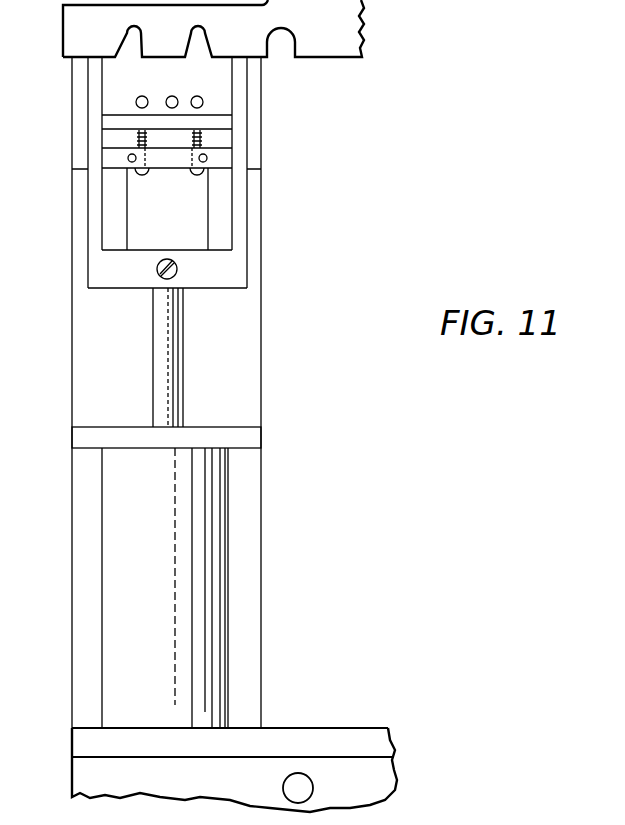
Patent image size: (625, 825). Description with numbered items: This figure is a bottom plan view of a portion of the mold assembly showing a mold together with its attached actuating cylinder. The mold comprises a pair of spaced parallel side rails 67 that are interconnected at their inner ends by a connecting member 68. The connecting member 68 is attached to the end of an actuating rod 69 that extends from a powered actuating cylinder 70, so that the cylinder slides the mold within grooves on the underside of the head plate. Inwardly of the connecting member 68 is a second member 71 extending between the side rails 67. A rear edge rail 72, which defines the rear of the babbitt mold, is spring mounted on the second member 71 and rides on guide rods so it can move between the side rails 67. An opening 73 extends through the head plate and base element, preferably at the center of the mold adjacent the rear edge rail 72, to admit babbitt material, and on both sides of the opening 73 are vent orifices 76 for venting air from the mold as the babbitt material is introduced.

The side rails 67 is at (98, 90).
The connecting member 68 is at (227, 276).
The actuating rod 69 is at (183, 332).
The actuating cylinder 70 is at (212, 507).
The second member 71 is at (172, 172).
The rear edge rail 72 is at (120, 120).
The opening 73 is at (172, 96).
The vent orifices 76 is at (143, 96).